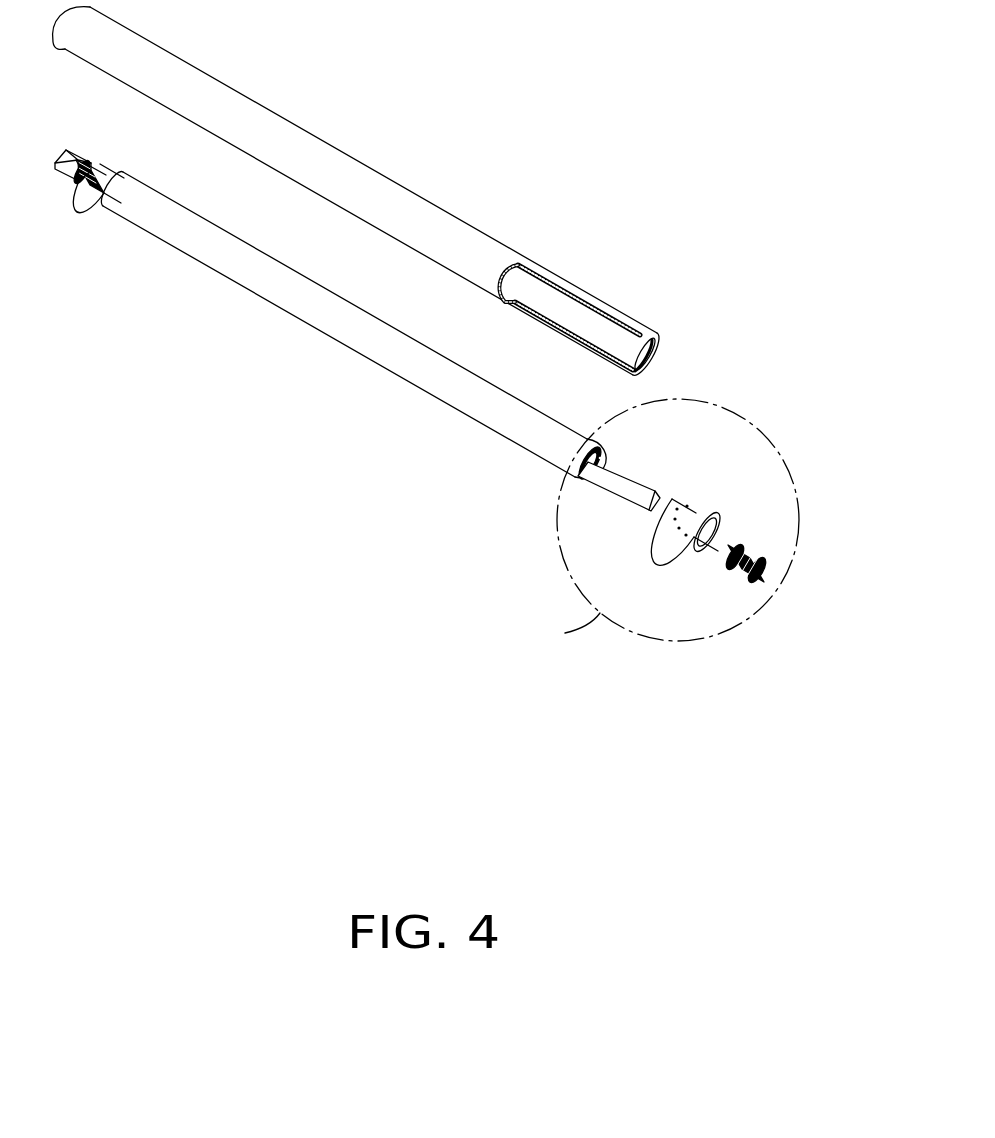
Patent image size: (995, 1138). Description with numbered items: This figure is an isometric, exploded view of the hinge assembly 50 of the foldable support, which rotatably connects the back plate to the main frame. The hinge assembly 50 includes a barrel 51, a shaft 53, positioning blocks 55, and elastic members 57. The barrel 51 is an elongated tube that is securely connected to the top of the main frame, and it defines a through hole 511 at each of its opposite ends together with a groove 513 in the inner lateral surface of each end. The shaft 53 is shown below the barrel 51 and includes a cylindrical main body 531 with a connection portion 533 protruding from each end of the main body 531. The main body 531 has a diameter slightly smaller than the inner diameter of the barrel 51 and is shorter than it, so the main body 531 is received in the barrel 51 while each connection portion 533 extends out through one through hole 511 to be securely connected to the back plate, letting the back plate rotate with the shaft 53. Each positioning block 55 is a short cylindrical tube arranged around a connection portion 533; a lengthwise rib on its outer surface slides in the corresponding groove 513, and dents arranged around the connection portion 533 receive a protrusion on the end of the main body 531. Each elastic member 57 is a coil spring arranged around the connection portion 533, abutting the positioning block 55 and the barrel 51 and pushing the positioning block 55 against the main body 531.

The hinge assembly 50 is at (533, 203).
The barrel 51 is at (358, 185).
The through hole 511 is at (643, 350).
The groove 513 is at (633, 372).
The shaft 53 is at (463, 550).
The main body 531 is at (425, 373).
The connection portion 533 is at (617, 477).
The positioning block 55 is at (705, 512).
The elastic member 57 is at (766, 572).